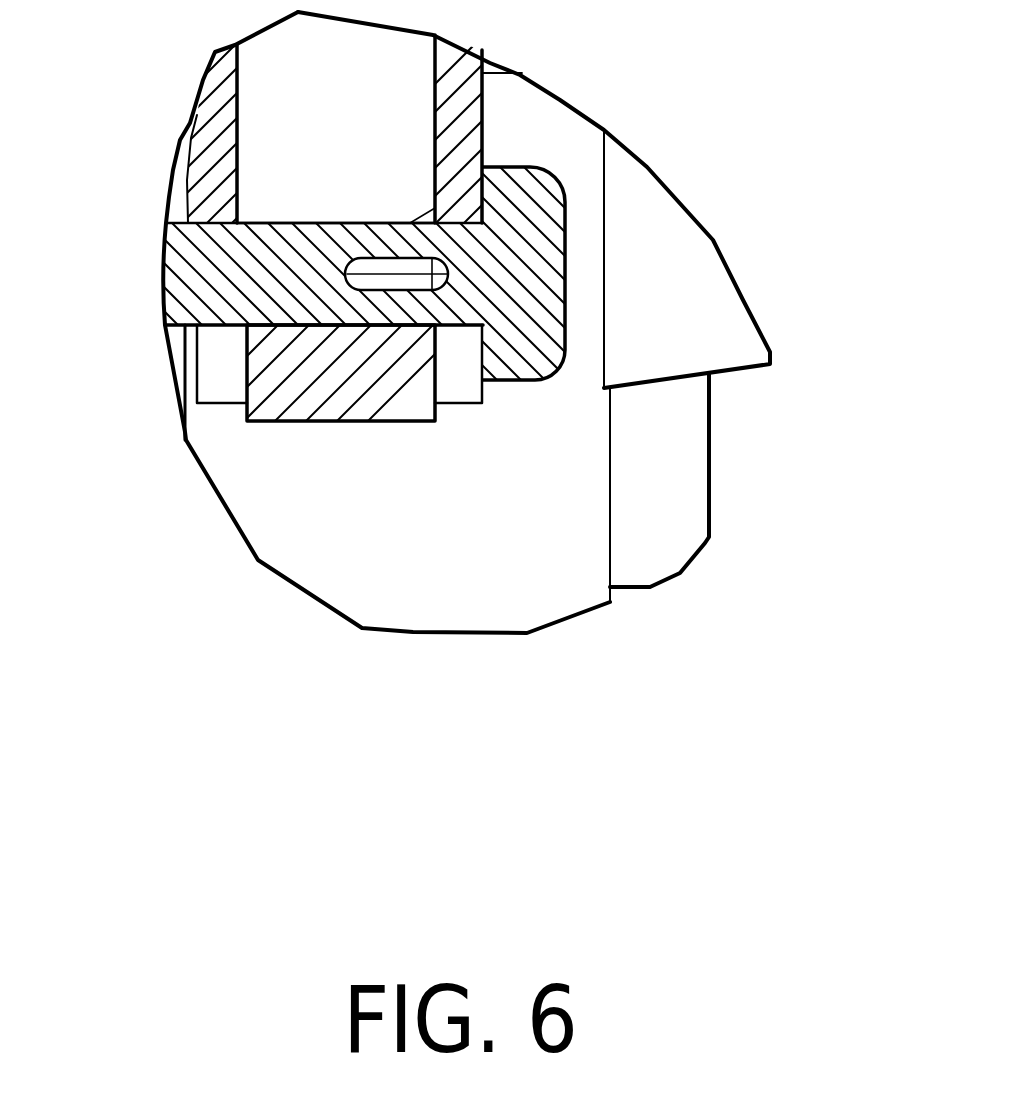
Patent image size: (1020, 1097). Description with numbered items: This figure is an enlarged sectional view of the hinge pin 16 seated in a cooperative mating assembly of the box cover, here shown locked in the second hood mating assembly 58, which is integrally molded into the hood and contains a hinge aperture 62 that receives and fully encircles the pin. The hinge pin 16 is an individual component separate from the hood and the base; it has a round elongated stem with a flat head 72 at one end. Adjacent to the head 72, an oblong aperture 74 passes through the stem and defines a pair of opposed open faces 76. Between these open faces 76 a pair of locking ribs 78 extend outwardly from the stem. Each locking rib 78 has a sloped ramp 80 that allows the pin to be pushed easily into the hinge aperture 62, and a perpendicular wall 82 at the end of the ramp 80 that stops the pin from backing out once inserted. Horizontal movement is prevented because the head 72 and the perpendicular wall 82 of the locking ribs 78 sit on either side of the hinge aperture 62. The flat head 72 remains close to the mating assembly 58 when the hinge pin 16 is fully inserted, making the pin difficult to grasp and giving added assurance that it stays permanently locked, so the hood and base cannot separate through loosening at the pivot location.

The hinge pin 16 is at (187, 280).
The second hood mating assembly 58 is at (457, 370).
The hinge aperture 62 is at (460, 327).
The head 72 is at (543, 313).
The oblong aperture 74 is at (402, 277).
The open faces 76 is at (405, 277).
The locking ribs 78 is at (410, 229).
The sloped ramp 80 is at (435, 208).
The perpendicular wall 82 is at (435, 222).